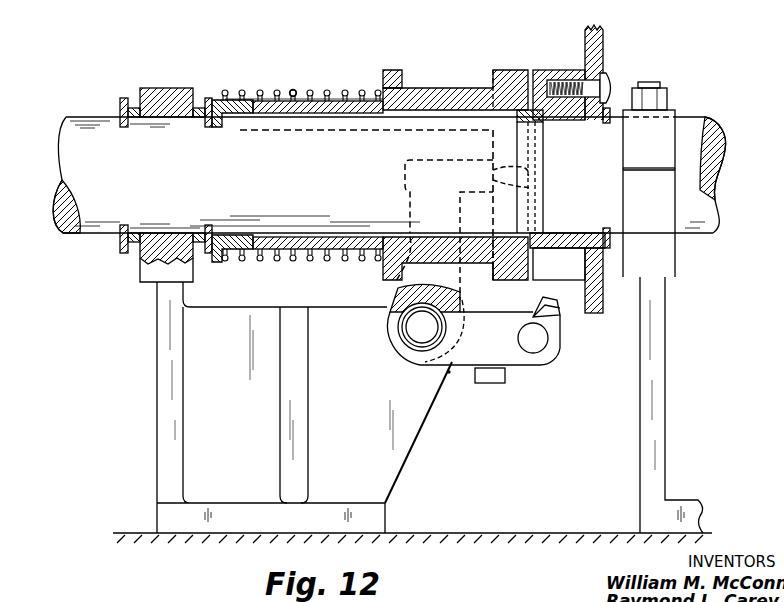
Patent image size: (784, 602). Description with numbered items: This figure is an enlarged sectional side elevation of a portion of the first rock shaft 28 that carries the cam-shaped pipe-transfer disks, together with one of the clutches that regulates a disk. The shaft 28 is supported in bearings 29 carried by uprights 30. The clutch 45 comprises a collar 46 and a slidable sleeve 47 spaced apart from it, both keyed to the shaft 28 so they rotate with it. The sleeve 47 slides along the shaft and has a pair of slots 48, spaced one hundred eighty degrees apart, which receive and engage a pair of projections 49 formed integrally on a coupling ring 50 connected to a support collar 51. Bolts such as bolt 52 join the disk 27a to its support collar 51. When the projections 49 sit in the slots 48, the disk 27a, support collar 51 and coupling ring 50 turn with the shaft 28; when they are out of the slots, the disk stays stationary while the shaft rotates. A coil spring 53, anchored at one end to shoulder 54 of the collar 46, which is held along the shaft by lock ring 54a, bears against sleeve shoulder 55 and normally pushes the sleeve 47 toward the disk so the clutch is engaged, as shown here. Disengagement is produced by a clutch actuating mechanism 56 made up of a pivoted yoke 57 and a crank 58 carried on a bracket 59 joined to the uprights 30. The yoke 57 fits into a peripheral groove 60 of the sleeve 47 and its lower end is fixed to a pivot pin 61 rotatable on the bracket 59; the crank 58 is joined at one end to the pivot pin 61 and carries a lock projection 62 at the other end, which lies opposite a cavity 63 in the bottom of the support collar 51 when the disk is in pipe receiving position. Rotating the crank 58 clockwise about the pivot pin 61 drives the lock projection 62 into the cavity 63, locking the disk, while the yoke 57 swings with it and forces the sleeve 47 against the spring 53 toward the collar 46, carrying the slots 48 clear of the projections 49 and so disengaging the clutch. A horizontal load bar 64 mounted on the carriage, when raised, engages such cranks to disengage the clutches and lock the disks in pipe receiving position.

The disk 27a is at (600, 37).
The first rock shaft 28 is at (97, 116).
The bearings 29 is at (157, 88).
The uprights 30 is at (157, 367).
The clutch 45 is at (357, 87).
The collar 46 is at (251, 100).
The slidable sleeve 47 is at (315, 100).
The slots 48 is at (493, 160).
The projections 49 is at (533, 178).
The coupling ring 50 is at (540, 123).
The support collar 51 is at (567, 70).
The bolt 52 is at (611, 78).
The coil spring 53 is at (293, 90).
The shoulder 54 is at (218, 100).
The lock ring 54a is at (208, 98).
The sleeve shoulder 55 is at (391, 70).
The clutch actuating mechanism 56 is at (449, 378).
The pivoted yoke 57 is at (405, 181).
The crank 58 is at (522, 366).
The bracket 59 is at (407, 440).
The peripheral groove 60 is at (455, 88).
The pivot pin 61 is at (416, 336).
The lock projection 62 is at (541, 301).
The cavity 63 is at (567, 272).
The horizontal load bar 64 is at (499, 384).